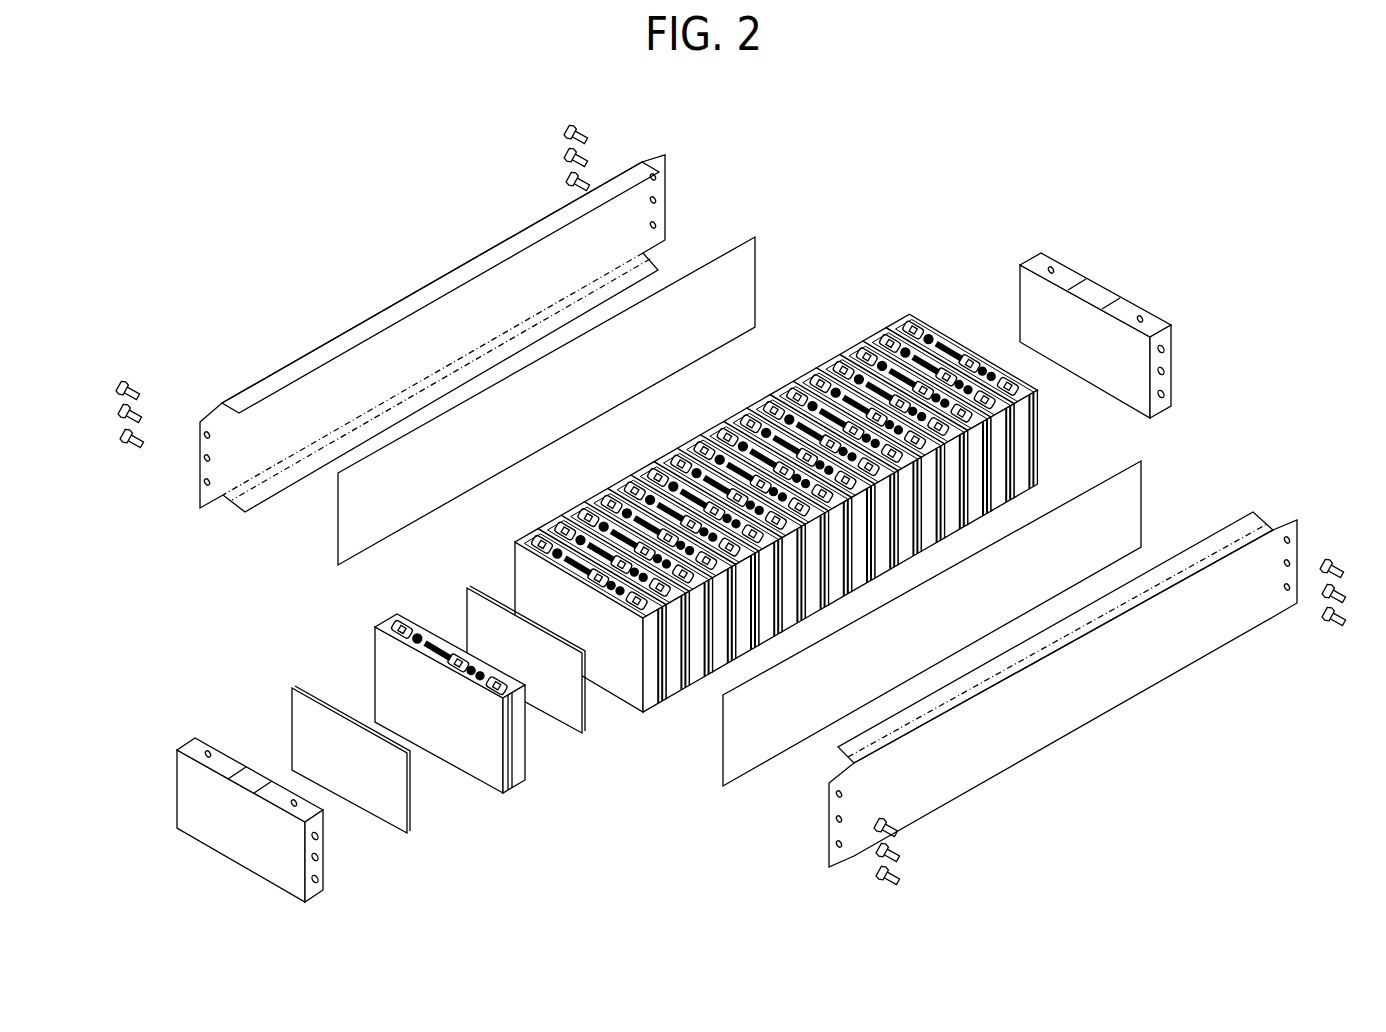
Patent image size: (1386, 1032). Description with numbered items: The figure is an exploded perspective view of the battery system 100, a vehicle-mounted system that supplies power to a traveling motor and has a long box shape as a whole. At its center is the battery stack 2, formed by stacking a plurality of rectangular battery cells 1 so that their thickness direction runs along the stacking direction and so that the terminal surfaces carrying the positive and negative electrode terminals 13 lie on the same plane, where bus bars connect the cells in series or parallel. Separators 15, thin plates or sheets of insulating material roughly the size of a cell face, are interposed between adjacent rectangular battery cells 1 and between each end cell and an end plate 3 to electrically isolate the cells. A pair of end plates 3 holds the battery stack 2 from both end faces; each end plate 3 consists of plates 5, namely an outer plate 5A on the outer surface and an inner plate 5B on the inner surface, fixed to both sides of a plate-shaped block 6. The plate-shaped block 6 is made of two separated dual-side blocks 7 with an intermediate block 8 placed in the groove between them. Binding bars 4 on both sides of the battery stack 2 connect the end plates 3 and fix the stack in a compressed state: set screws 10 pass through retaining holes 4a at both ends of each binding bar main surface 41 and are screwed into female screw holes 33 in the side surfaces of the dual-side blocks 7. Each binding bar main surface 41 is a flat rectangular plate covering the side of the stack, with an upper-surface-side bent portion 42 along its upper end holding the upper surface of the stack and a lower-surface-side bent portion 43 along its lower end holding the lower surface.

The battery system 100 is at (731, 517).
The rectangular battery cell 1 is at (664, 551).
The battery stack 2 is at (664, 551).
The end plate 3 is at (713, 523).
The binding bar 4 is at (708, 510).
The retaining hole 4a is at (660, 200).
The binding bar main surface 41 is at (470, 312).
The upper-surface-side bent portion 42 is at (406, 310).
The lower-surface-side bent portion 43 is at (298, 474).
The plate 5 is at (674, 593).
The outer plate 5A is at (250, 836).
The inner plate 5B is at (1095, 353).
The plate-shaped block 6 is at (657, 459).
The dual-side block 7 is at (208, 750).
The intermediate block 8 is at (245, 775).
The set screw 10 is at (592, 150).
The electrode terminal 13 is at (403, 635).
The separator 15 is at (541, 695).
The female screw hole 33 is at (325, 858).